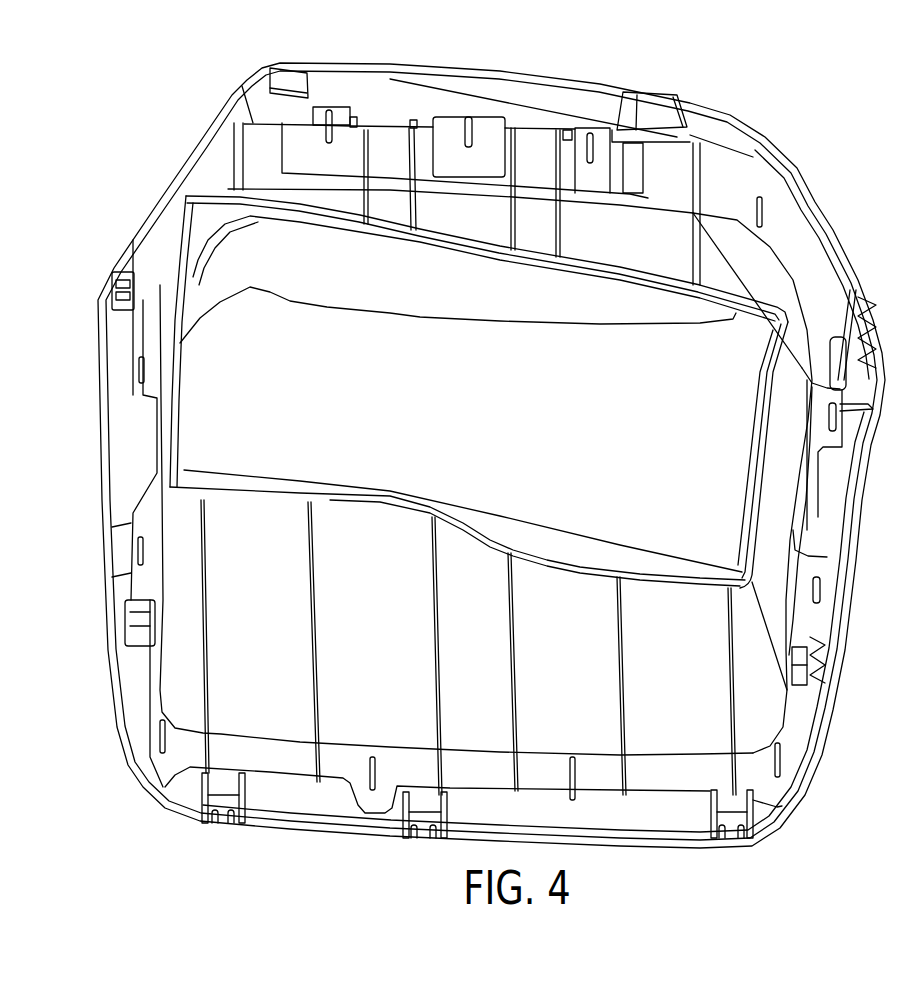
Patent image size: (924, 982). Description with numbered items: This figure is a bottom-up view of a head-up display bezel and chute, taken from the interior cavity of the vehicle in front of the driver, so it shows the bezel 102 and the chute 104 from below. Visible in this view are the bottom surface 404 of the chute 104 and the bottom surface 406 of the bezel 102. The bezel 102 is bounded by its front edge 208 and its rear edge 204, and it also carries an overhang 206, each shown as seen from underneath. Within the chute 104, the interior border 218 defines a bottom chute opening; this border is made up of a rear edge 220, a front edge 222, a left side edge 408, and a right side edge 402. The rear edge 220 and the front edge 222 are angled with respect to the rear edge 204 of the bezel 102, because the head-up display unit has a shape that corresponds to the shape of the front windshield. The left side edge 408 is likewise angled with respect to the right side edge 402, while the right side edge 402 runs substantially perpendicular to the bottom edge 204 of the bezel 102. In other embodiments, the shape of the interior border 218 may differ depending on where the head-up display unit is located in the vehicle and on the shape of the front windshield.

The bezel 102 is at (603, 87).
The chute 104 is at (777, 253).
The rear edge of the bezel 204 is at (657, 848).
The overhang of the bezel 206 is at (479, 392).
The front edge of the bezel 208 is at (507, 70).
The interior border of the chute 218 is at (687, 550).
The rear edge of the interior border 220 is at (537, 520).
The front edge of the interior border 222 is at (733, 320).
The right side edge of the interior border 402 is at (180, 390).
The bottom surface of the chute 404 is at (752, 704).
The bottom surface of the bezel 406 is at (835, 519).
The left side edge of the interior border 408 is at (765, 407).